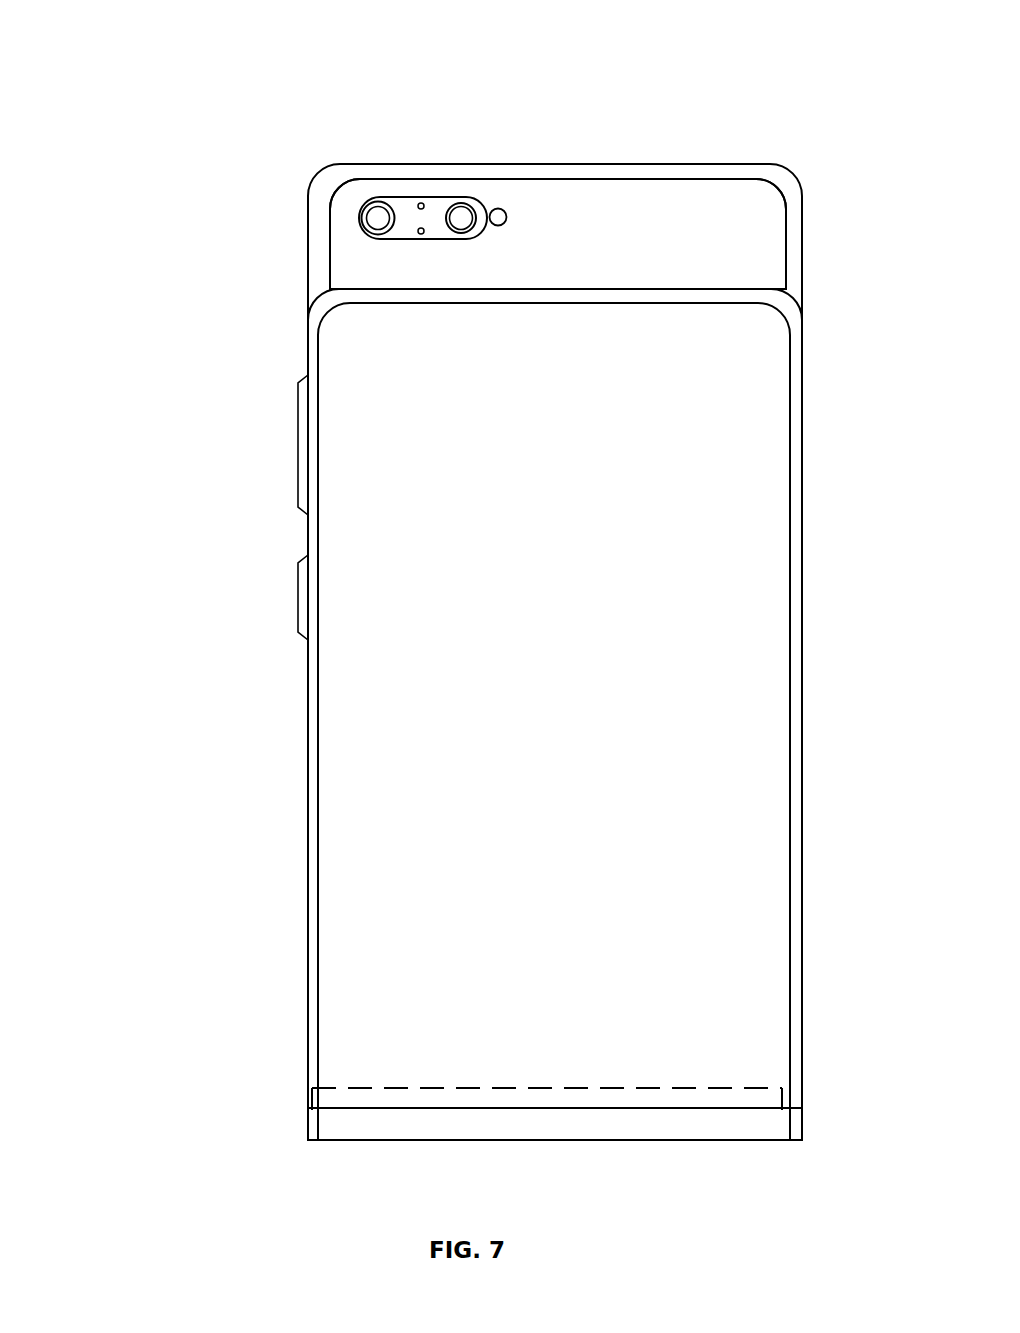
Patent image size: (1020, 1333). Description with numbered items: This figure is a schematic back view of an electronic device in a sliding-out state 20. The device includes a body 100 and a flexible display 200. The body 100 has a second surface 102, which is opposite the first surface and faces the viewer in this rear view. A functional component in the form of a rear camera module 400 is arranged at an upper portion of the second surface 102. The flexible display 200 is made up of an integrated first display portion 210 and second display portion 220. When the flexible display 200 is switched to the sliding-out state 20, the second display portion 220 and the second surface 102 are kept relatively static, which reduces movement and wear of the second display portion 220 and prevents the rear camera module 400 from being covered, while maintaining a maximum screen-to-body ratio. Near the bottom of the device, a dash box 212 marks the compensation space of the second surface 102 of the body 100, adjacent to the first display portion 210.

The sliding-out state 20 is at (158, 115).
The body 100 is at (550, 166).
The second surface 102 is at (398, 270).
The rear camera module 400 is at (381, 215).
The flexible display 200 is at (435, 714).
The second display portion 220 is at (365, 785).
The first display portion 210 is at (310, 1098).
The dash box 212 is at (540, 1088).